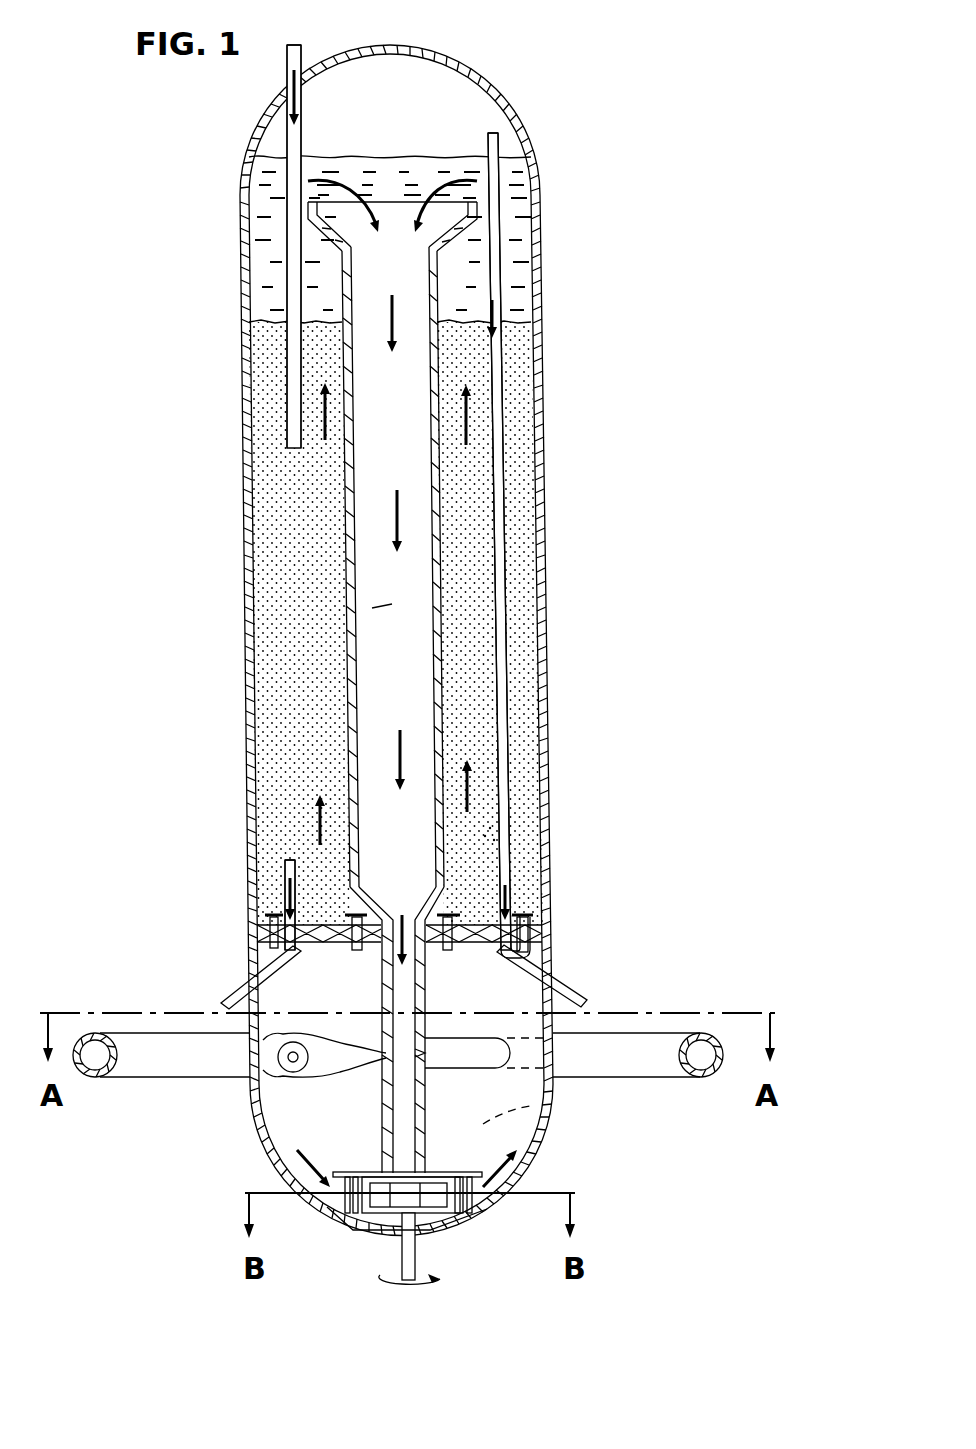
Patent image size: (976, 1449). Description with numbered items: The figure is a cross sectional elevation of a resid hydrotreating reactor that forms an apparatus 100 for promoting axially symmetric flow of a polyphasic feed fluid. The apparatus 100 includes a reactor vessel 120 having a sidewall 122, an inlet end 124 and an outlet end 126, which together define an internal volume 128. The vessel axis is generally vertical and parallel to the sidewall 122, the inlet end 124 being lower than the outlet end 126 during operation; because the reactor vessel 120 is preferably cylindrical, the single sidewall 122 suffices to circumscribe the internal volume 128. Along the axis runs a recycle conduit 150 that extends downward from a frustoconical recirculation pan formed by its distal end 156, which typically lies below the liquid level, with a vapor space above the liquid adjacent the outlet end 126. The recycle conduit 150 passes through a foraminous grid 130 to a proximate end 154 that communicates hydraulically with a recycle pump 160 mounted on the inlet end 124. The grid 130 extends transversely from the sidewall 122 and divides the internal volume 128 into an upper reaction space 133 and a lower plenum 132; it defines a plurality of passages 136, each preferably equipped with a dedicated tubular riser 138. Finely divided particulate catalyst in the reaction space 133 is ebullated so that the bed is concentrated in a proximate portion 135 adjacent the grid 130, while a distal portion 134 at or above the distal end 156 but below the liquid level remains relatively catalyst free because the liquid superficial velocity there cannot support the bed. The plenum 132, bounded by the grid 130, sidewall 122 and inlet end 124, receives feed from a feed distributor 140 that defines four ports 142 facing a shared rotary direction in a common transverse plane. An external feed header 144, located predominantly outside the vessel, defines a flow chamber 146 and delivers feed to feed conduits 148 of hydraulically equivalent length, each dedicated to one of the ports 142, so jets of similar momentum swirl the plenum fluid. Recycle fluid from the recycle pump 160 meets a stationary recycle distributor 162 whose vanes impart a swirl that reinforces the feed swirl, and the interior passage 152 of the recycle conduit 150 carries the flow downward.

The apparatus 100 is at (600, 225).
The reactor vessel 120 is at (560, 362).
The sidewall 122 is at (543, 450).
The inlet end 124 is at (463, 1215).
The outlet end 126 is at (448, 50).
The internal volume 128 is at (522, 570).
The foraminous grid 130 is at (505, 905).
The plenum 132 is at (548, 1111).
The reaction space 133 is at (520, 772).
The distal portion 134 is at (310, 192).
The proximate portion 135 is at (495, 832).
The passages 136 is at (347, 950).
The tubular riser 138 is at (355, 938).
The feed distributor 140 is at (150, 1020).
The ports 142 is at (253, 1078).
The external feed header 144 is at (150, 1080).
The flow chamber 146 is at (95, 1062).
The feed conduits 148 is at (290, 1072).
The recycle conduit 150 is at (348, 706).
The draft tube interior passage 152 is at (380, 610).
The proximate end 154 is at (418, 1215).
The distal end 156 is at (332, 238).
The recycle pump 160 is at (393, 1213).
The stationary recycle distributor 162 is at (340, 1210).